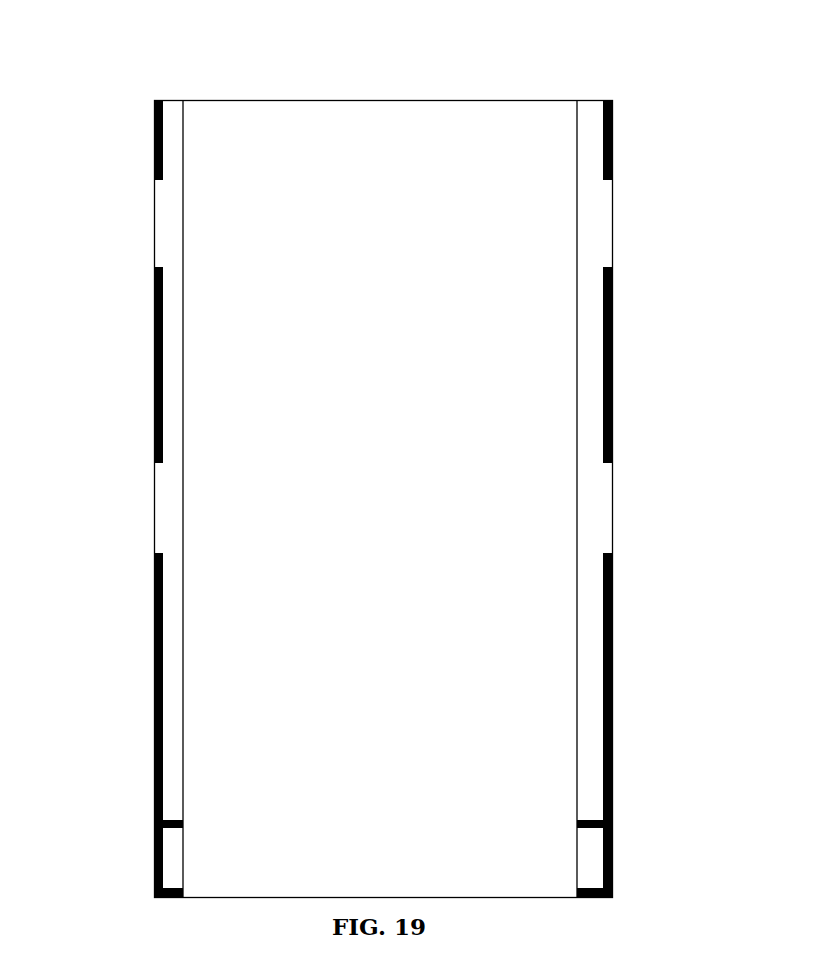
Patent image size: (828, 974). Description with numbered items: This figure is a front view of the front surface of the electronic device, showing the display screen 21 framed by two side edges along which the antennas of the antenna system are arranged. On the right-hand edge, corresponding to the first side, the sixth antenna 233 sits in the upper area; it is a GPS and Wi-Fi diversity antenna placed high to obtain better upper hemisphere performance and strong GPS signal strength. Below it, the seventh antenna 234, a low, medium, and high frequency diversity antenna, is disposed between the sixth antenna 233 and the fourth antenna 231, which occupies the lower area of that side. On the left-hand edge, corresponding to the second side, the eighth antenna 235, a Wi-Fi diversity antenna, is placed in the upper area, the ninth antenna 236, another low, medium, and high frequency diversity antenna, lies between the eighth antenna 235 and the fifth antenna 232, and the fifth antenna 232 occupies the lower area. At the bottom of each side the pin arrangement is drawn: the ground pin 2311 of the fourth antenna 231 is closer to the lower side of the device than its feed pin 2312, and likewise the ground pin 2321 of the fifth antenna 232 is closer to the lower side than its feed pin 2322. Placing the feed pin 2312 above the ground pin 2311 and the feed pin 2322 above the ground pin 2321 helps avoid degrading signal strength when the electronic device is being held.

The display screen 21 is at (383, 160).
The sixth antenna 233 is at (613, 142).
The seventh antenna 234 is at (613, 365).
The eighth antenna 235 is at (154, 137).
The ninth antenna 236 is at (154, 366).
The fourth antenna 231 is at (480, 725).
The ground pin 2311 is at (588, 888).
The feed pin 2312 is at (592, 822).
The fifth antenna 232 is at (258, 725).
The ground pin 2321 is at (173, 888).
The feed pin 2322 is at (173, 818).